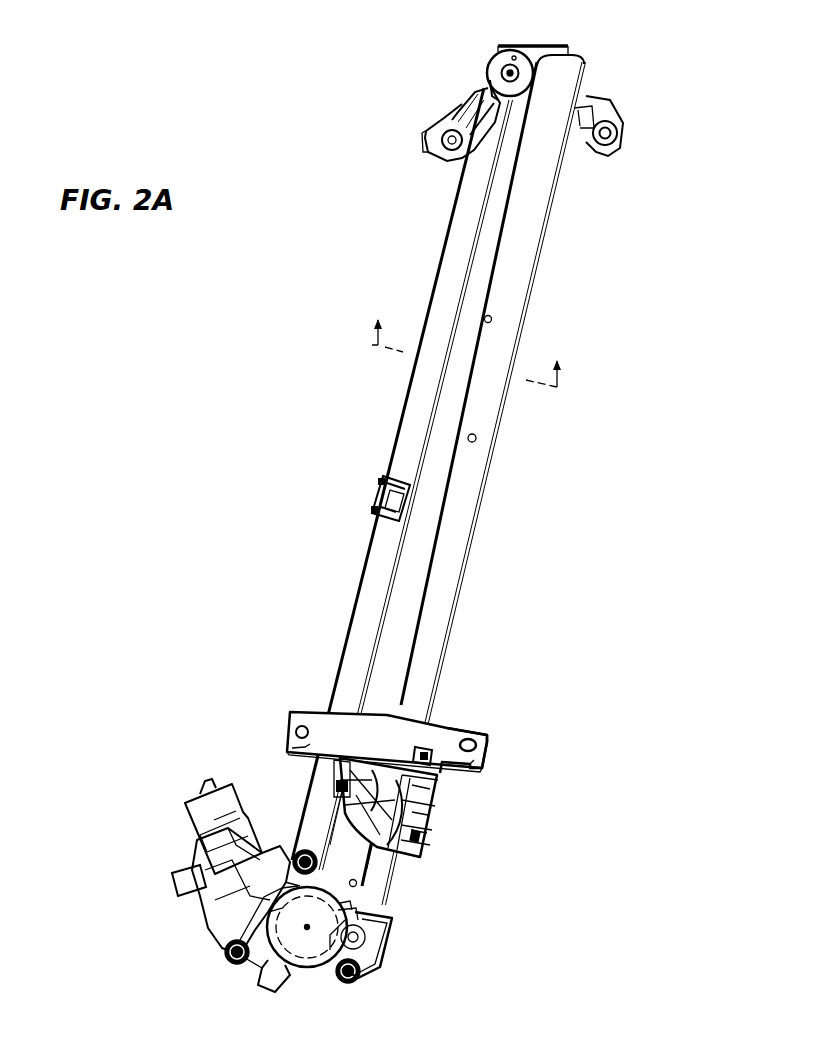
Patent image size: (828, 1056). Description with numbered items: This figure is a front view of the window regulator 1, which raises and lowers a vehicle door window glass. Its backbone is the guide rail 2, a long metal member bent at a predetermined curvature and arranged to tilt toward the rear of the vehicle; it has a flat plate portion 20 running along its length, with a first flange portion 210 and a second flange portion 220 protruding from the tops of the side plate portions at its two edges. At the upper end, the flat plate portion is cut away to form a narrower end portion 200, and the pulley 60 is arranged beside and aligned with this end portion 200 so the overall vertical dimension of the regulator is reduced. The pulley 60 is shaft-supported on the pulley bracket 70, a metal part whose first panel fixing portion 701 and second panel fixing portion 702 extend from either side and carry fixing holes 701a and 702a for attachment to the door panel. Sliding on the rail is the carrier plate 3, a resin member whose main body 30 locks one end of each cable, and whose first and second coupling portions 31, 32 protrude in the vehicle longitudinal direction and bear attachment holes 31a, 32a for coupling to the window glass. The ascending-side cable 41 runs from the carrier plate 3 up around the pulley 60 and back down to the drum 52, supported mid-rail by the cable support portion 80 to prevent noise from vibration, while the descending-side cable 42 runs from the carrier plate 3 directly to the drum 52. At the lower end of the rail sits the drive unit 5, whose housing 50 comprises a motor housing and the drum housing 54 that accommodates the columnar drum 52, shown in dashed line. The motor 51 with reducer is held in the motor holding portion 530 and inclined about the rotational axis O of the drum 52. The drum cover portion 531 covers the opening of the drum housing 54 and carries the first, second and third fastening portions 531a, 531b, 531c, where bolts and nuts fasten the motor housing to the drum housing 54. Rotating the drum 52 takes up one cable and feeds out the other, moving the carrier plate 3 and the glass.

The window regulator 1 is at (362, 137).
The guide rail 2 is at (512, 448).
The carrier plate 3 is at (459, 716).
The drive unit 5 is at (160, 816).
The flat plate portion 20 is at (455, 532).
The main body 30 is at (425, 843).
The first coupling portion 31 is at (314, 720).
The attachment hole 31a is at (300, 727).
The second coupling portion 32 is at (490, 735).
The attachment hole 32a is at (480, 748).
The ascending-side cable 41 is at (446, 236).
The descending-side cable 42 is at (371, 874).
The housing 50 is at (410, 963).
The motor 51 is at (200, 798).
The drum 52 is at (305, 956).
The drum housing 54 is at (376, 970).
The pulley 60 is at (506, 53).
The pulley bracket 70 is at (613, 92).
The cable support portion 80 is at (381, 478).
The end portion 200 is at (561, 58).
The first flange portion 210 is at (465, 573).
The second flange portion 220 is at (395, 561).
The motor holding portion 530 is at (218, 889).
The drum cover portion 531 is at (282, 955).
The first fastening portion 531a is at (301, 850).
The second fastening portion 531b is at (231, 957).
The third fastening portion 531c is at (352, 980).
The first panel fixing portion 701 is at (470, 101).
The fixing hole 701a is at (447, 121).
The second panel fixing portion 702 is at (620, 131).
The fixing hole 702a is at (616, 144).
The rotational axis O is at (309, 930).